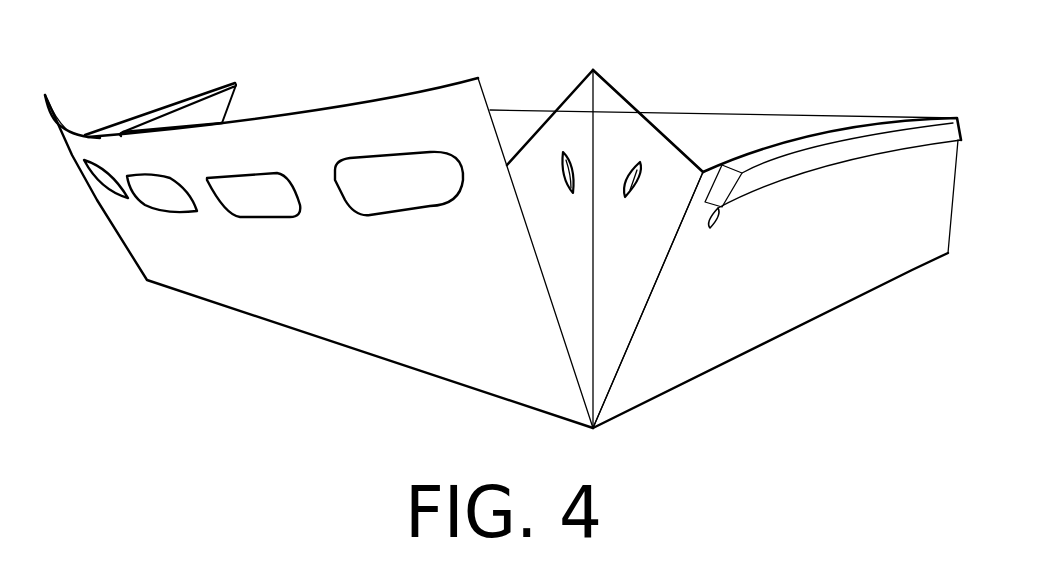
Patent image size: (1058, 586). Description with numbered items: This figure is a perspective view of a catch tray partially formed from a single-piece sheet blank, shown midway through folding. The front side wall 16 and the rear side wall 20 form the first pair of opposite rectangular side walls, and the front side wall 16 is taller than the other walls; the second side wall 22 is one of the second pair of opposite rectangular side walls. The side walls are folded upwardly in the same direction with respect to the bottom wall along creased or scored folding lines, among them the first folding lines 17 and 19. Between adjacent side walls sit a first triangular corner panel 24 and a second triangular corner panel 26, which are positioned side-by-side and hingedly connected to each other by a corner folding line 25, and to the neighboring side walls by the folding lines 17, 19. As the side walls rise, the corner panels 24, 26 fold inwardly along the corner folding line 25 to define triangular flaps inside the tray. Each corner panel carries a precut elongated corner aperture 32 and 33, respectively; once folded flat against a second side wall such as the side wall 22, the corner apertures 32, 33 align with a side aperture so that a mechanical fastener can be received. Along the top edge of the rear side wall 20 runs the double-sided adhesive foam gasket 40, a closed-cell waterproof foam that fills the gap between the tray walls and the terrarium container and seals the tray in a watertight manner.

The front side wall 16 is at (295, 270).
The first folding line 17 is at (670, 248).
The first folding line 19 is at (530, 237).
The rear side wall 20 is at (722, 137).
The second side wall 22 is at (815, 292).
The first triangular corner panel 24 is at (567, 292).
The corner folding line 25 is at (232, 107).
The second triangular corner panel 26 is at (627, 300).
The corner aperture 32 is at (565, 150).
The corner aperture 33 is at (636, 160).
The adhesive foam gasket 40 is at (882, 142).